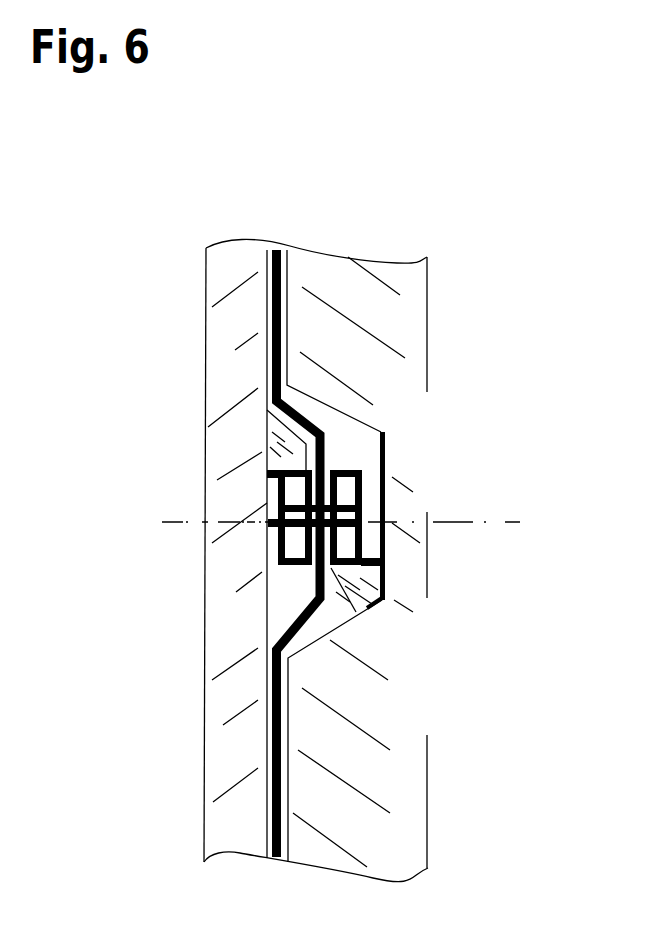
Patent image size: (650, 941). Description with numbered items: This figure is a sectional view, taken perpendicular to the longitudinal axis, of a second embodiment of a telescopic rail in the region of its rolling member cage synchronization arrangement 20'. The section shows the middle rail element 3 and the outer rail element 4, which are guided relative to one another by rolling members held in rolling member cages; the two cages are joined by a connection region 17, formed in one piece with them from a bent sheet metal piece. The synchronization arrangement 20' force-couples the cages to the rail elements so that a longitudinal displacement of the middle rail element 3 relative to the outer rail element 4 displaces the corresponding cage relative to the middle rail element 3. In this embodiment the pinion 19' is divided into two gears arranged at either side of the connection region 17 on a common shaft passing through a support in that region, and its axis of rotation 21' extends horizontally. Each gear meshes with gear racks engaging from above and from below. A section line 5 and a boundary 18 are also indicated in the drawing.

The middle rail element 3 is at (228, 266).
The outer rail element 4 is at (413, 272).
The section line 5 is at (349, 517).
The connection region 17 is at (285, 265).
The boundary layer 18 is at (367, 430).
The pinion 19' is at (373, 493).
The rolling member cage synchronization arrangement 20' is at (282, 560).
The axis of rotation 21' is at (413, 568).